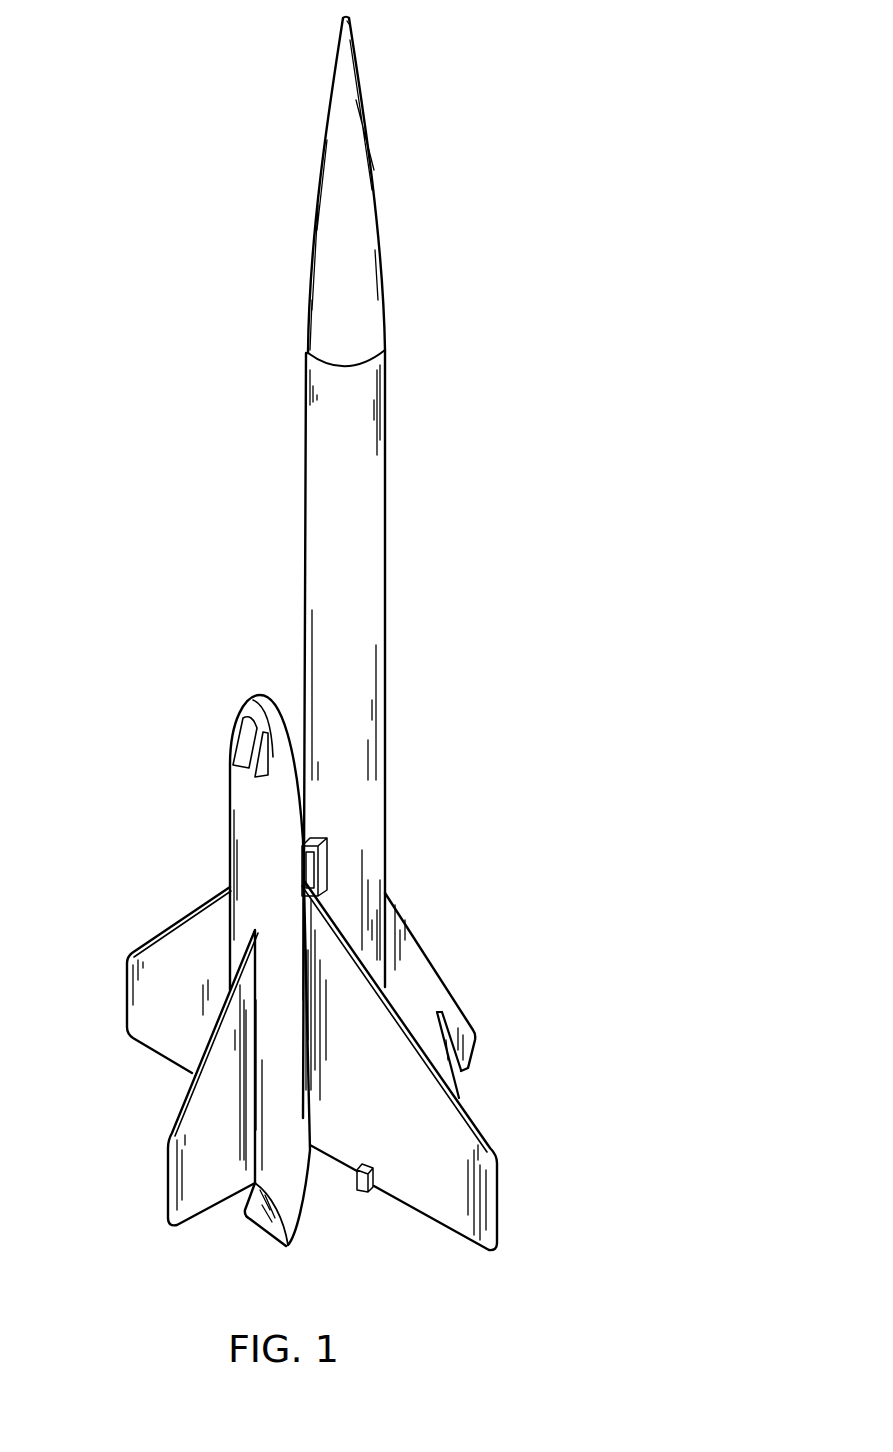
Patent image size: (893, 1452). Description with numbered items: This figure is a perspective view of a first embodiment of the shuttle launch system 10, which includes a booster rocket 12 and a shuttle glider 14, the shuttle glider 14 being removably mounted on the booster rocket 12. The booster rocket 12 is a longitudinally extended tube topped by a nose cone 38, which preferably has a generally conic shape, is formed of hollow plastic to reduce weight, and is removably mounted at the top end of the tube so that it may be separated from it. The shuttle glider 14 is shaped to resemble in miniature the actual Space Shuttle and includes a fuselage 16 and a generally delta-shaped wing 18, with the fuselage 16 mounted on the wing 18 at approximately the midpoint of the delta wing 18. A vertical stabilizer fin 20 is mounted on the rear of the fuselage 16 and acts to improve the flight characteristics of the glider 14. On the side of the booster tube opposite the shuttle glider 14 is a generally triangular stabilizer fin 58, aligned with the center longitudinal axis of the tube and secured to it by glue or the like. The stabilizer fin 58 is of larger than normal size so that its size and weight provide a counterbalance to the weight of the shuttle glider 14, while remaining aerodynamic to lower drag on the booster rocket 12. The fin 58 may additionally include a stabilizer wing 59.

The shuttle launch system 10 is at (232, 396).
The booster rocket 12 is at (353, 578).
The shuttle glider 14 is at (264, 856).
The fuselage 16 is at (244, 892).
The delta-shaped wing 18 is at (425, 1188).
The vertical stabilizer fin 20 is at (203, 1182).
The nose cone 38 is at (355, 202).
The stabilizer fin 58 is at (417, 987).
The stabilizer wing 59 is at (447, 1075).